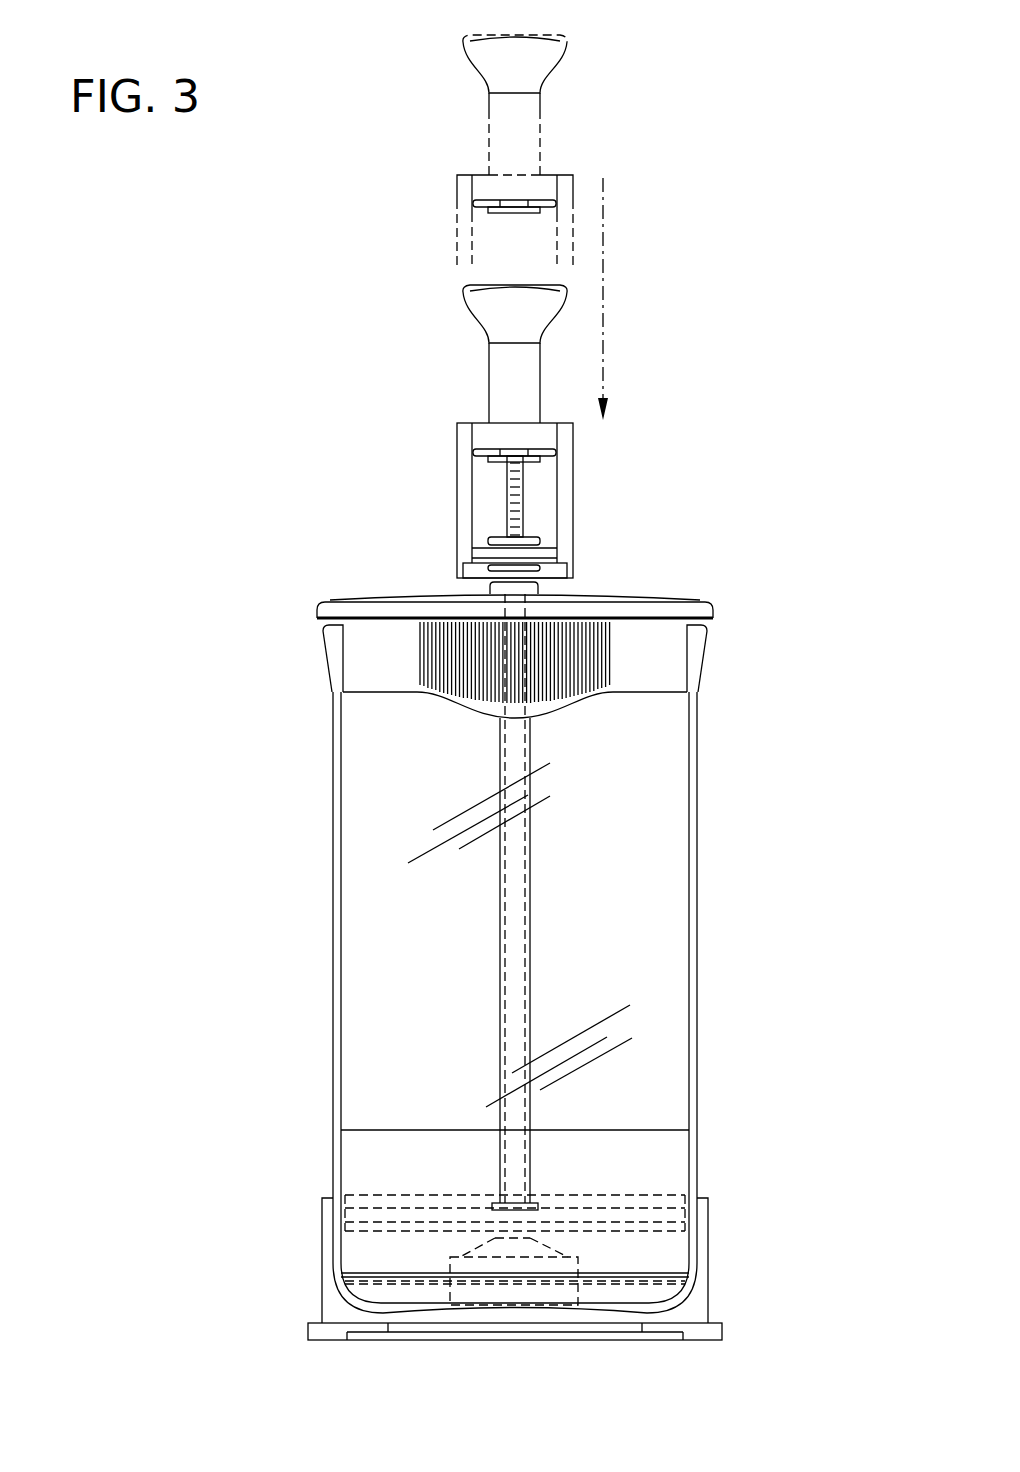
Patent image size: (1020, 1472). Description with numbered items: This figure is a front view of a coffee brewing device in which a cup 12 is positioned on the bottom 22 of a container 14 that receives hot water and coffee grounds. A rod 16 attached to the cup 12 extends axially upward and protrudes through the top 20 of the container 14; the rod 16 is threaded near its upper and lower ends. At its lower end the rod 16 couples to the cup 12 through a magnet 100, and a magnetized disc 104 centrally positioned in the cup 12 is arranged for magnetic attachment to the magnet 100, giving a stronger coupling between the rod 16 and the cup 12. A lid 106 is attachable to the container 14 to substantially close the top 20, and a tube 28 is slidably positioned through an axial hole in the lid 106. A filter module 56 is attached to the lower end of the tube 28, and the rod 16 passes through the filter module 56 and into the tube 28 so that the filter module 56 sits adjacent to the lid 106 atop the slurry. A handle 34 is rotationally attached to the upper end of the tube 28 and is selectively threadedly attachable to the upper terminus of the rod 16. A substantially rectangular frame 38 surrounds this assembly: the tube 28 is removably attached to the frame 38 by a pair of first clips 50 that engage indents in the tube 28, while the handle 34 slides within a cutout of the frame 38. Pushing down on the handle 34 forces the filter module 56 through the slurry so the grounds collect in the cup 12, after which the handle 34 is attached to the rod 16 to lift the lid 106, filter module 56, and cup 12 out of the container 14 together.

The cup 12 is at (625, 1130).
The container 14 is at (700, 955).
The rod 16 is at (517, 495).
The top of the container 20 is at (365, 625).
The bottom of the container 22 is at (375, 1315).
The tube 28 is at (530, 880).
The handle 34 is at (517, 377).
The frame 38 is at (538, 437).
The first clips 50 is at (540, 567).
The filter module 56 is at (385, 1212).
The magnet 100 is at (565, 1265).
The disc 104 is at (560, 1295).
The lid 106 is at (700, 600).